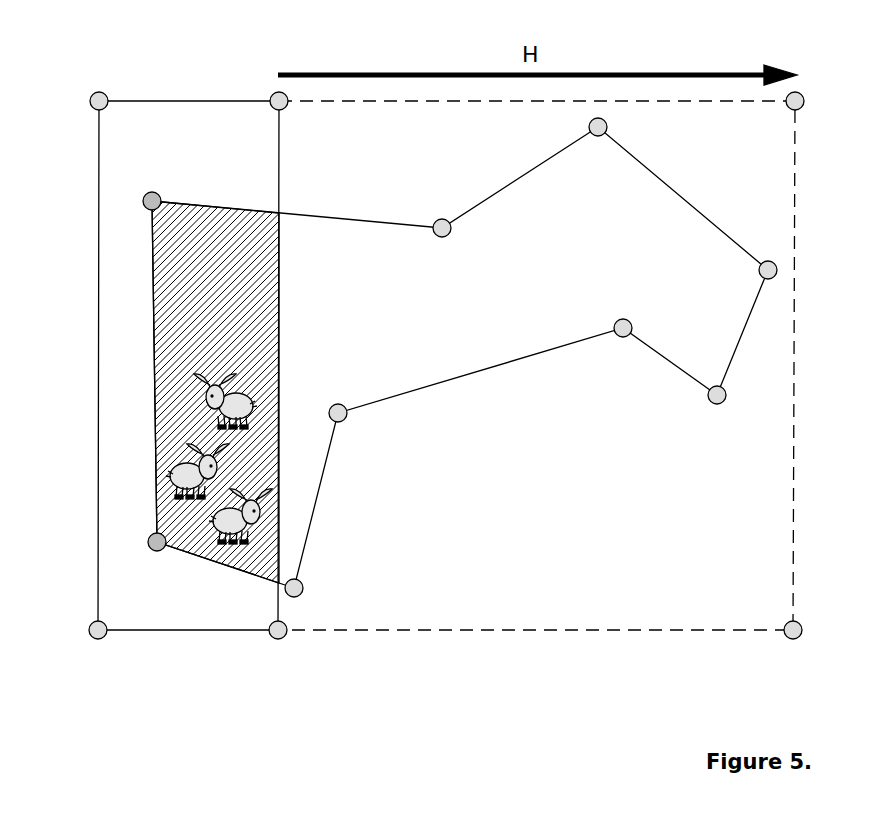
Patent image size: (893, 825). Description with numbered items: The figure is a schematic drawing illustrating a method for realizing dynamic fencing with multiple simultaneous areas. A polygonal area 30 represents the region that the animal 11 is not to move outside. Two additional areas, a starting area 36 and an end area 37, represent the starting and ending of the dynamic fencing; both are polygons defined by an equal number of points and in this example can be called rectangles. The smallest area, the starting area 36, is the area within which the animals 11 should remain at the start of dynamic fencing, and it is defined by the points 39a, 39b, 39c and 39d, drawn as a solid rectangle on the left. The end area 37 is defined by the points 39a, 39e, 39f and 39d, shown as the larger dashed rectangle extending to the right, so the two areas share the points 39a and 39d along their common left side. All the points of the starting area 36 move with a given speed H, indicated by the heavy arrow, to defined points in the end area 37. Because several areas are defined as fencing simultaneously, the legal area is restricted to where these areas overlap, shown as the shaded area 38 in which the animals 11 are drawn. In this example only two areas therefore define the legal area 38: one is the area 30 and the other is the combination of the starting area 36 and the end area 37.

The animal 11 is at (248, 515).
The area 30 is at (702, 318).
The starting area 36 is at (175, 166).
The end area 37 is at (765, 165).
The legal area 38 is at (197, 338).
The point 39a is at (93, 94).
The point 39b is at (274, 93).
The point 39c is at (272, 640).
The point 39d is at (92, 640).
The point 39e is at (800, 93).
The point 39f is at (787, 640).